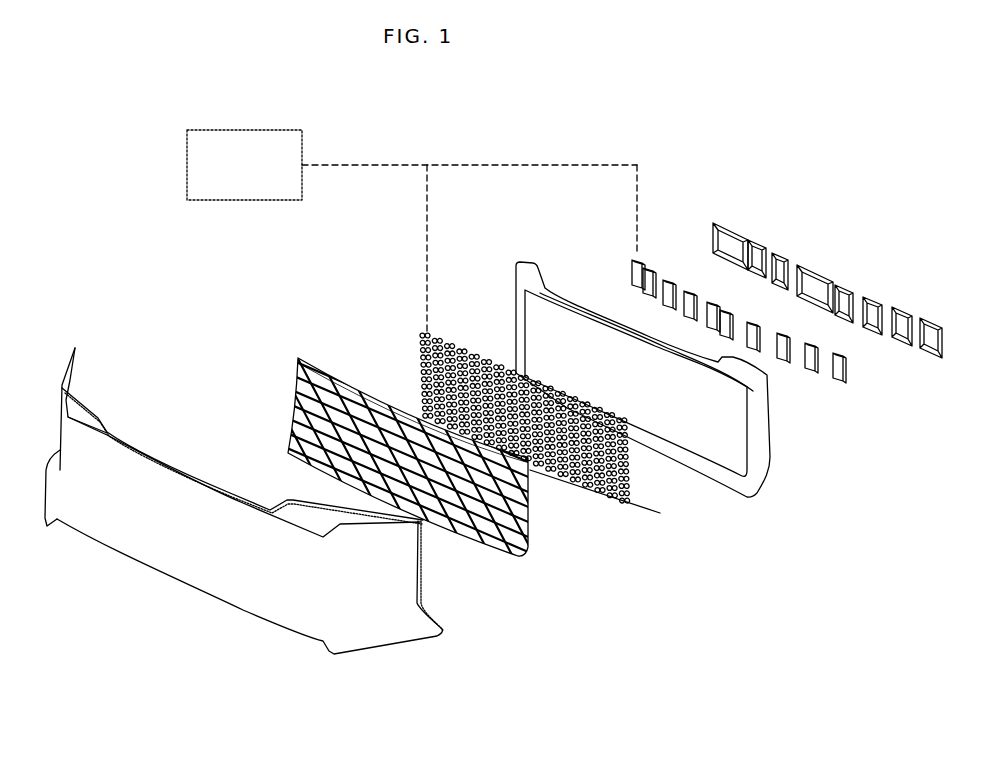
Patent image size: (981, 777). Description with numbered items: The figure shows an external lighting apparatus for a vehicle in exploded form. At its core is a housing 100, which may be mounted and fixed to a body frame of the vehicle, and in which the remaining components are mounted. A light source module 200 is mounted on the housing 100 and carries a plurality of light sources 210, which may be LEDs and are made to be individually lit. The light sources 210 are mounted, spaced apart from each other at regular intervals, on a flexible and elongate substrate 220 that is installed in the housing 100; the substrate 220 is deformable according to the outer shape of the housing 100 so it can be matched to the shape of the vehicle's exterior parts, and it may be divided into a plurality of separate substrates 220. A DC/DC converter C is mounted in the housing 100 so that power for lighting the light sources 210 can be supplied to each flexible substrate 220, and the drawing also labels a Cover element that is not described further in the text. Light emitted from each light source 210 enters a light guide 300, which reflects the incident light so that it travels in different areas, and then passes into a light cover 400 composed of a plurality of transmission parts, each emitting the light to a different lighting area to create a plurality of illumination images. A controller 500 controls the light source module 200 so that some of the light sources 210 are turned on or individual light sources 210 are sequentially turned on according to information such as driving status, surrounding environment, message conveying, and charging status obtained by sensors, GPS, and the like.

The housing 100 is at (753, 510).
The light source module 200 is at (568, 464).
The light sources 210 is at (599, 487).
The flexible substrate 220 is at (640, 499).
The light guide 300 is at (507, 563).
The light cover 400 is at (413, 650).
The controller 500 is at (187, 163).
The DC/DC converter C is at (845, 393).
The cover Cover is at (937, 368).